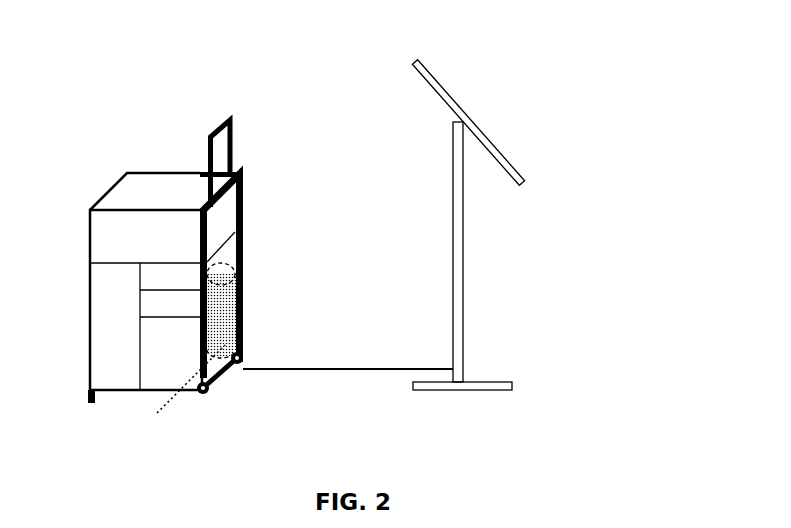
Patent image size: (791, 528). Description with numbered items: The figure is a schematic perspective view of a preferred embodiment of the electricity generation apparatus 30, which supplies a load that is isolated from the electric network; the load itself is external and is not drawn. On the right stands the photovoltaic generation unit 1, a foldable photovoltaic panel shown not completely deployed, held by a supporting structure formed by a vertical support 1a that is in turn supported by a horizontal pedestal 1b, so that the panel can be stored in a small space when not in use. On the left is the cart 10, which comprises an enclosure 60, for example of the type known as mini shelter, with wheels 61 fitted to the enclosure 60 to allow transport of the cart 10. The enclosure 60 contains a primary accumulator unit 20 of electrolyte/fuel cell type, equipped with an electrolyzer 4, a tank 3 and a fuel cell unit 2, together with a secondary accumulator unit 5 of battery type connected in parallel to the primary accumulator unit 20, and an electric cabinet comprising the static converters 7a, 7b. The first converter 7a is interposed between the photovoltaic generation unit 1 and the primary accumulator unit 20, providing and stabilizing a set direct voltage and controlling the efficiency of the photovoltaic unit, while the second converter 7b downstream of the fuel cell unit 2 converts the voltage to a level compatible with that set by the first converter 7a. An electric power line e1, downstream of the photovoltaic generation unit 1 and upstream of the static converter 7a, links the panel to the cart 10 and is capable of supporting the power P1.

The enclosure 60 is at (119, 284).
The cart 10 is at (229, 287).
The electricity generation apparatus 30 is at (533, 234).
The photovoltaic generation unit 1 is at (446, 94).
The vertical support 1a is at (458, 273).
The horizontal pedestal 1b is at (485, 388).
The fuel cell unit 2 is at (142, 421).
The primary accumulator unit 20 is at (105, 380).
The electrolyzer 4 is at (125, 326).
The secondary accumulator unit 5 is at (171, 354).
The first converter 7a is at (170, 281).
The second converter 7b is at (170, 306).
The tank 3 is at (221, 310).
The wheels 61 is at (243, 363).
The electric power line e1 is at (313, 372).
The power P1 is at (392, 357).